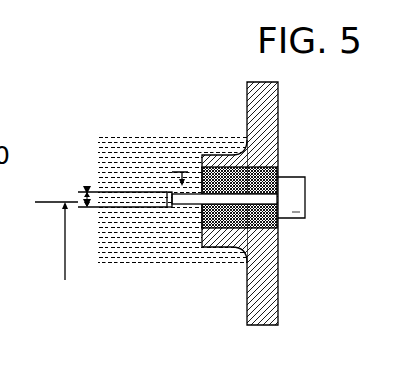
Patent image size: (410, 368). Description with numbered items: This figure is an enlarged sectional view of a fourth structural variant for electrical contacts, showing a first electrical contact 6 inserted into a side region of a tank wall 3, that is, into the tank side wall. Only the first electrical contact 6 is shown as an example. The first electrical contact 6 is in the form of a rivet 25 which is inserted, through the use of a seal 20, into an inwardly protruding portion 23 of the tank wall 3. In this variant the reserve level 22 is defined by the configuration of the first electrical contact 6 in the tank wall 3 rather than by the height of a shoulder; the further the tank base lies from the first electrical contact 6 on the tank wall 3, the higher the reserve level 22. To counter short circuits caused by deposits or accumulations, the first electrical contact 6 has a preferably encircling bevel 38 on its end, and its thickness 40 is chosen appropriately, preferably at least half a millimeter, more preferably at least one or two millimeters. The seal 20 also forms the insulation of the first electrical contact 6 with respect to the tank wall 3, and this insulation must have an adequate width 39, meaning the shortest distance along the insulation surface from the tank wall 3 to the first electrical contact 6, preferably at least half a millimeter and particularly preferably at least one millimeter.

The tank wall 3 is at (267, 308).
The seal 20 is at (278, 170).
The inwardly protruding portion 23 is at (216, 153).
The bevel 38 is at (168, 190).
The width 39 is at (176, 172).
The thickness 40 is at (83, 200).
The reserve level 22 is at (65, 247).
The rivet 25 is at (300, 185).
The first electrical contact 6 is at (293, 212).